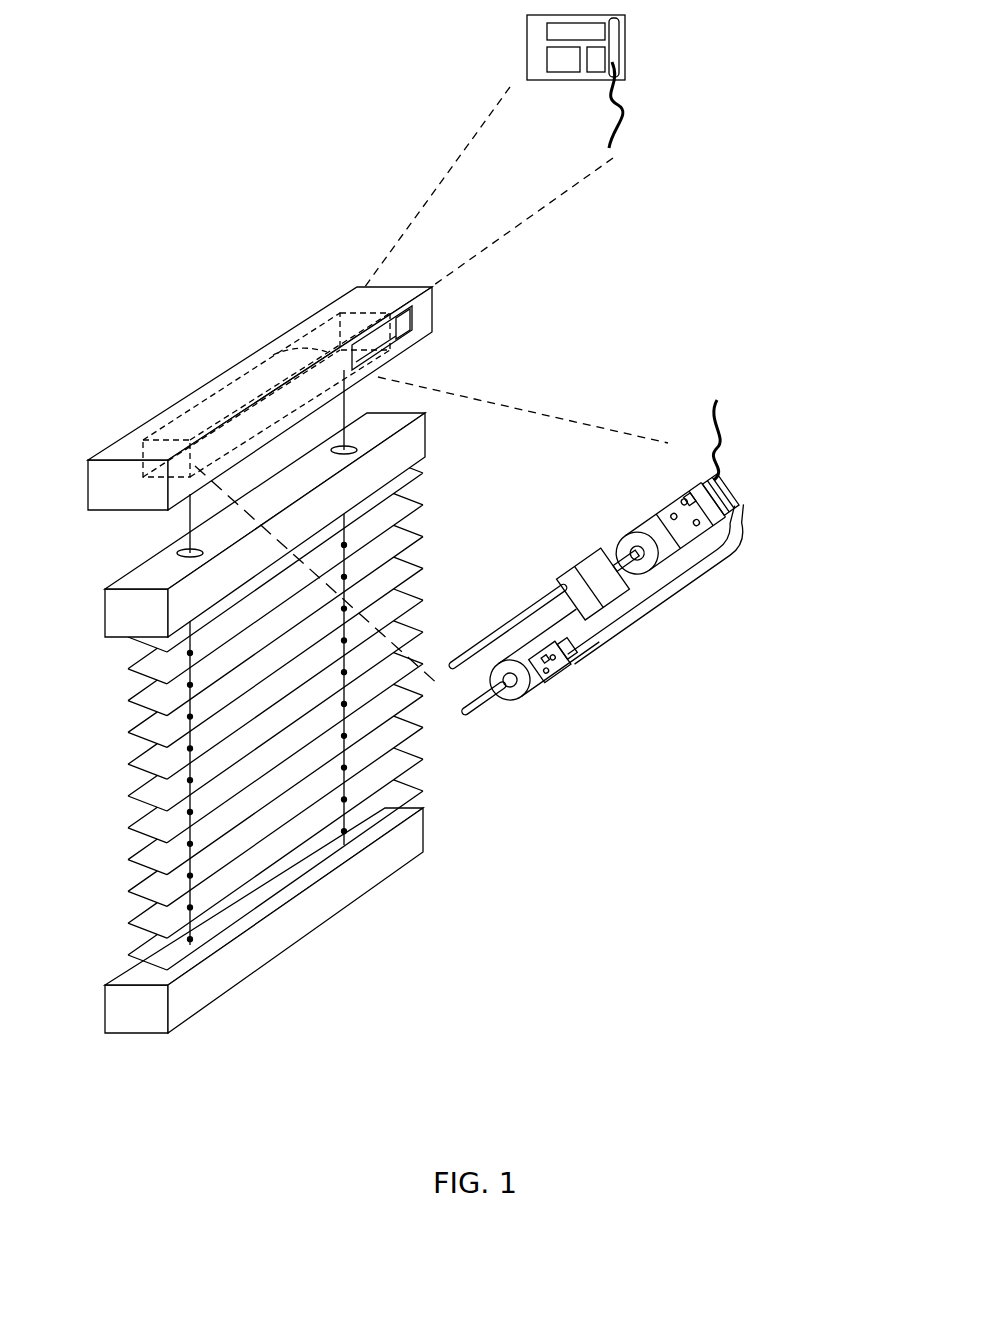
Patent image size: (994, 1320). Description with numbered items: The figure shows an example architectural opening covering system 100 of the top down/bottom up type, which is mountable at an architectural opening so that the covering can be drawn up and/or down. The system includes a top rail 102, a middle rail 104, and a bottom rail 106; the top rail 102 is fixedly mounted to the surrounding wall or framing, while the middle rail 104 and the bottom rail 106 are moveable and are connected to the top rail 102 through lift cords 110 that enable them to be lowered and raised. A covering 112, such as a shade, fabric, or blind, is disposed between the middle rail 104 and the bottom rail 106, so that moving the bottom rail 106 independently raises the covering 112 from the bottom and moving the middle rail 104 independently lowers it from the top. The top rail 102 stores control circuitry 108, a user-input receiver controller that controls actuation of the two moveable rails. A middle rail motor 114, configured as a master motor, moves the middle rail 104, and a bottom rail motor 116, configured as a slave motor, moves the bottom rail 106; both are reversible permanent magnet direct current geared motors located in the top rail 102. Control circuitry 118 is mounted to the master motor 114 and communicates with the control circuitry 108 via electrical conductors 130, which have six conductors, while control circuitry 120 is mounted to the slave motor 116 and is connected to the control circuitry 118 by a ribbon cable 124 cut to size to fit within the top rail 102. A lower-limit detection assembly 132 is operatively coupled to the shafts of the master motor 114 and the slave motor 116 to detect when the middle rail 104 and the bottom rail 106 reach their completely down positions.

The architectural opening covering system 100 is at (134, 99).
The top rail 102 is at (348, 287).
The middle rail 104 is at (103, 600).
The bottom rail 106 is at (103, 1016).
The control circuitry 108 is at (527, 31).
The lift cords 110 is at (366, 397).
The covering 112 is at (126, 724).
The middle rail motor 114 is at (648, 525).
The bottom rail motor 116 is at (534, 691).
The control circuitry 118 is at (744, 517).
The control circuitry 120 is at (574, 678).
The ribbon cable 124 is at (662, 605).
The electrical conductors 130 is at (667, 80).
The lower-limit detection assembly 132 is at (620, 590).